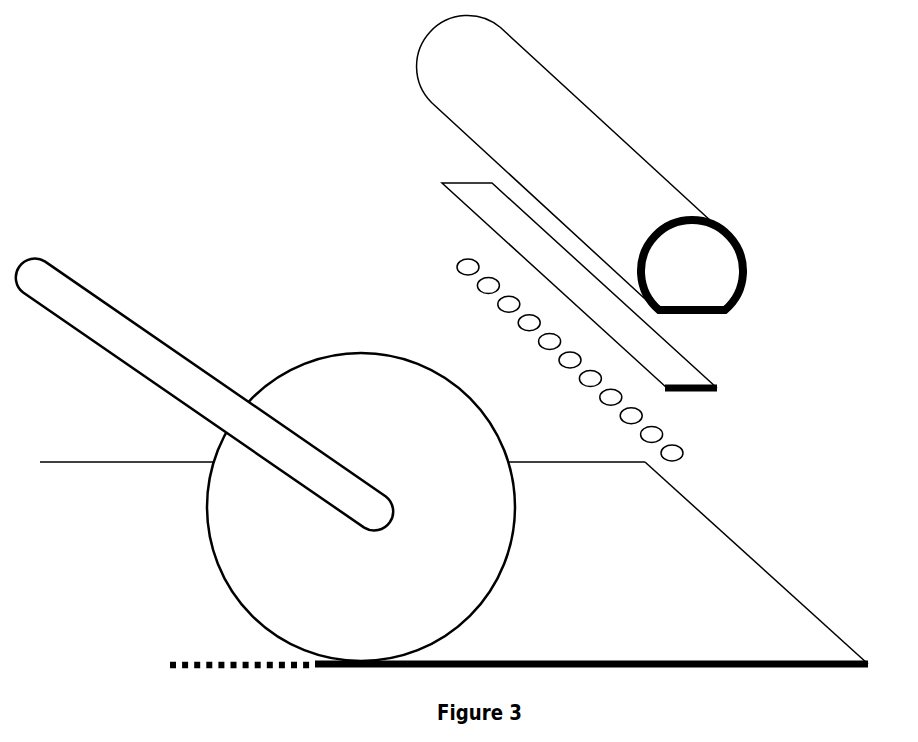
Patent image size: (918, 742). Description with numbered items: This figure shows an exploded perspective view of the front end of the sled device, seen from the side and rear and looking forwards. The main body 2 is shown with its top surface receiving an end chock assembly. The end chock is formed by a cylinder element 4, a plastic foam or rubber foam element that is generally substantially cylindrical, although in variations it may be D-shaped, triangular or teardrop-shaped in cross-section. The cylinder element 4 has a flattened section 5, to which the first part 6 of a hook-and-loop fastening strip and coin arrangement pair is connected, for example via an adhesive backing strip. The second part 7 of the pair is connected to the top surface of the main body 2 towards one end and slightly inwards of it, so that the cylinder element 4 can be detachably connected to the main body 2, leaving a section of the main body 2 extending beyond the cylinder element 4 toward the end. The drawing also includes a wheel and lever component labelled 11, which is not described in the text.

The main body 2 is at (683, 582).
The cylinder element 4 is at (627, 192).
The flattened section 5 is at (700, 313).
The first part of hook-and-loop fastening strip and coin arrangement pair 6 is at (677, 370).
The second part of hook-and-loop fastening strip and coin arrangement pair 7 is at (675, 453).
The wheel 11 is at (360, 398).